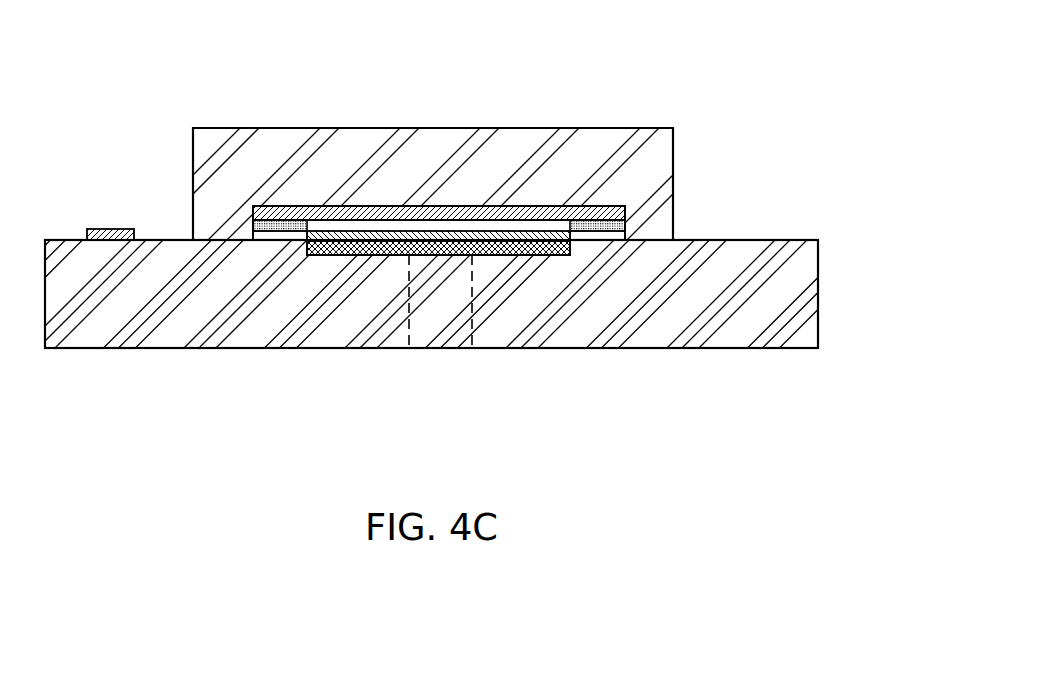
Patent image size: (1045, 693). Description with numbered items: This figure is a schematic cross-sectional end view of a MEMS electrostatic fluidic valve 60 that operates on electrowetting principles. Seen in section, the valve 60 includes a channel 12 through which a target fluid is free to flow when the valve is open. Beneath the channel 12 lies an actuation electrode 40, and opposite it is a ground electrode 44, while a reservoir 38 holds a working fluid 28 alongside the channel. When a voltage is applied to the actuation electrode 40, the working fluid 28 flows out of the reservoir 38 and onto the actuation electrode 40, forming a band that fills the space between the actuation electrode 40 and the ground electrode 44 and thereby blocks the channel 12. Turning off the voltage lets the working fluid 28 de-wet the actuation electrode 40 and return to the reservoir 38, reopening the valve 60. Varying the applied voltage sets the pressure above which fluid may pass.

The MEMS electrostatic fluidic valve 60 is at (445, 200).
The channel 12 is at (493, 207).
The working fluid 28 is at (253, 223).
The reservoir 38 is at (625, 223).
The ground electrode 44 is at (585, 207).
The actuation electrode 40 is at (537, 256).